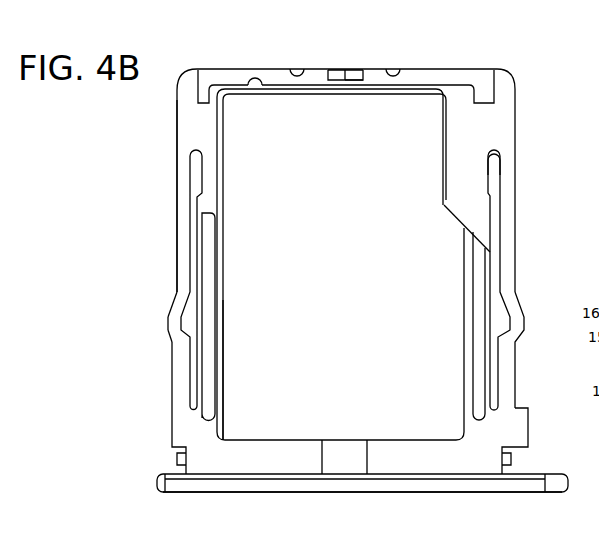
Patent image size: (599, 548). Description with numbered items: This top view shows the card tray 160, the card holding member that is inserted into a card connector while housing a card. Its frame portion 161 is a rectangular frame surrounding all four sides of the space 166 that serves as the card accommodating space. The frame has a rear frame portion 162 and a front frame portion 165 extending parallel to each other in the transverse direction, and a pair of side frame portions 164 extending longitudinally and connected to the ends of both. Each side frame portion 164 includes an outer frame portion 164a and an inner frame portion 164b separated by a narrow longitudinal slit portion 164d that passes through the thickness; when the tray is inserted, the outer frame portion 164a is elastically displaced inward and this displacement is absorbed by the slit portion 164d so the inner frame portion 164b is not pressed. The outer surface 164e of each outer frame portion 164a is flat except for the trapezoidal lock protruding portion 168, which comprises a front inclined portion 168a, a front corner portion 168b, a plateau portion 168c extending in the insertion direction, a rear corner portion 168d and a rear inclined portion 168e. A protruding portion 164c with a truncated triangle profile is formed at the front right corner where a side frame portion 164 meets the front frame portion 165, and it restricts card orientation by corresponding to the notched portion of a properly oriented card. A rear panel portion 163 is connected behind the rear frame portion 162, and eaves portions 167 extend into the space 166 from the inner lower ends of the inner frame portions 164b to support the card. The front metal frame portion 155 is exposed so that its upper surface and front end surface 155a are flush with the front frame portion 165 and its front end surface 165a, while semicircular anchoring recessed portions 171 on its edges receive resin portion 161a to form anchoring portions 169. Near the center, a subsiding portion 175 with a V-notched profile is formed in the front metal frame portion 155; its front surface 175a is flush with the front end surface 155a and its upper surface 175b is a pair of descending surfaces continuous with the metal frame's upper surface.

The front metal frame portion 155 is at (268, 90).
The front end surface of front metal frame portion 155a is at (255, 78).
The card tray 160 is at (147, 462).
The frame portion 161 is at (567, 494).
The resin portion 161a is at (528, 433).
The rear frame portion 162 is at (293, 468).
The rear panel portion 163 is at (250, 493).
The side frame portion 164 is at (212, 185).
The outer frame portion 164a is at (507, 232).
The inner frame portion 164b is at (203, 277).
The protruding portion 164c is at (443, 208).
The slit portion 164d is at (497, 175).
The outer surface 164e is at (177, 155).
The front frame portion 165 is at (392, 90).
The front end surface of front frame portion 165a is at (197, 68).
The space 166 is at (418, 433).
The eaves portion 167 is at (220, 340).
The lock protruding portion 168 is at (523, 332).
The front inclined portion 168a is at (176, 295).
The front corner portion 168b is at (168, 315).
The plateau portion 168c is at (170, 323).
The rear corner portion 168d is at (172, 340).
The rear inclined portion 168e is at (170, 352).
The anchoring portion 169 is at (395, 68).
The anchoring recessed portion 171 is at (297, 67).
The subsiding portion 175 is at (340, 82).
The front surface of subsiding portion 175a is at (347, 68).
The upper surface of subsiding portion 175b is at (355, 82).